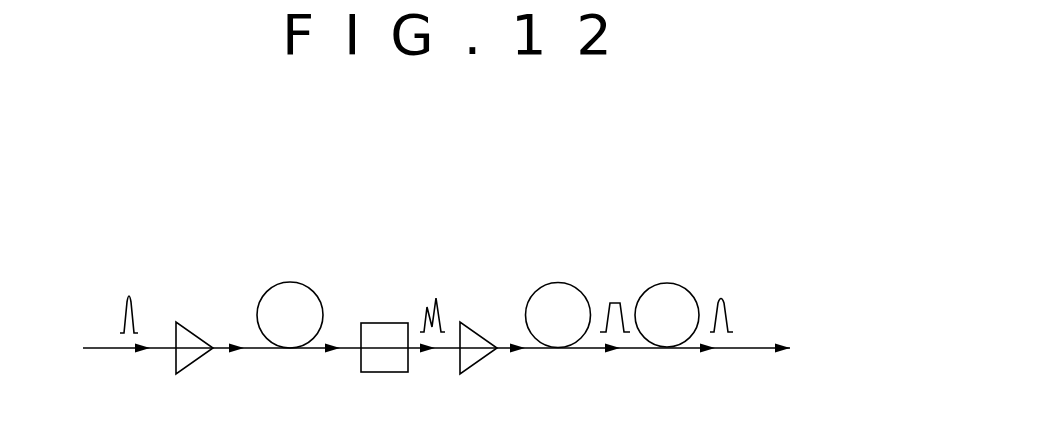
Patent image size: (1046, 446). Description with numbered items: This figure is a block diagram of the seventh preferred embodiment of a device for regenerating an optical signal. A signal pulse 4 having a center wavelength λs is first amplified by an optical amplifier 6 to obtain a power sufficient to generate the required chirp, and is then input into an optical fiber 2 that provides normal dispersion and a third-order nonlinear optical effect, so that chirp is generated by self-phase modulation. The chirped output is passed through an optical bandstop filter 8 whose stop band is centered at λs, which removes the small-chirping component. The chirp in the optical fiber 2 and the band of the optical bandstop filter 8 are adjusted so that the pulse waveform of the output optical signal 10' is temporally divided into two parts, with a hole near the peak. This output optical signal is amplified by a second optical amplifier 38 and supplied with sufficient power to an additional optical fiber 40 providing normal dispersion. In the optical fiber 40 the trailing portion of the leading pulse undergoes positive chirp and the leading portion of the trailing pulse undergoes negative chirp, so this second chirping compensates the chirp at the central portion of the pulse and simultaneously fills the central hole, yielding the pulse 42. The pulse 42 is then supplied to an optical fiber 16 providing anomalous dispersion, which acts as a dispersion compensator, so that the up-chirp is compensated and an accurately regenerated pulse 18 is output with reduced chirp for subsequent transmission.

The signal pulse 4 is at (129, 290).
The optical amplifier 6 is at (192, 368).
The optical fiber 2 is at (290, 282).
The optical bandstop filter 8 is at (385, 372).
The output optical signal 10' is at (432, 296).
The optical amplifier 38 is at (474, 365).
The optical fiber 40 is at (558, 282).
The pulse 42 is at (613, 301).
The optical fiber 16 is at (667, 283).
The regenerated pulse 18 is at (742, 288).